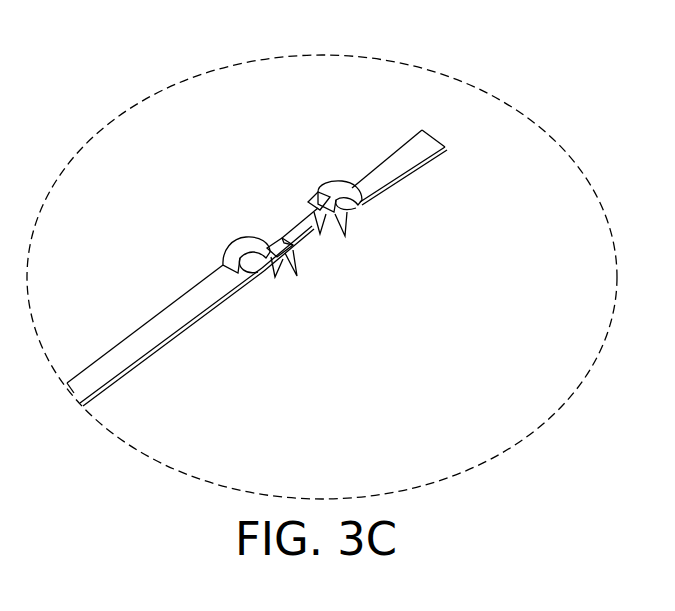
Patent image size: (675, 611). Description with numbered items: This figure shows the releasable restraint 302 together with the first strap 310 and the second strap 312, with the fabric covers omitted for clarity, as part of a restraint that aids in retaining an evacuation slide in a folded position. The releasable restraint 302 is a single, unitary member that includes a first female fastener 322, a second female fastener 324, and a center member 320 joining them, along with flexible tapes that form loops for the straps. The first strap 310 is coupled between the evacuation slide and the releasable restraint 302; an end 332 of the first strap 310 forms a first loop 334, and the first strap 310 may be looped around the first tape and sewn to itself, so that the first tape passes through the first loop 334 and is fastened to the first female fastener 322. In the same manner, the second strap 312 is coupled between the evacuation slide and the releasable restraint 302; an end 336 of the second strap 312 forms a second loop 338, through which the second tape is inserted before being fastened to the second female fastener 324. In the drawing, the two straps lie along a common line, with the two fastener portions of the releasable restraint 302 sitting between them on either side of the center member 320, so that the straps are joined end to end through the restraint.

The releasable restraint 302 is at (293, 183).
The first strap 310 is at (82, 373).
The second strap 312 is at (445, 147).
The center member 320 is at (300, 230).
The first female fastener 322 is at (283, 268).
The second female fastener 324 is at (345, 222).
The end of first strap 332 is at (237, 332).
The first loop 334 is at (235, 258).
The end of second strap 336 is at (386, 221).
The second loop 338 is at (341, 188).